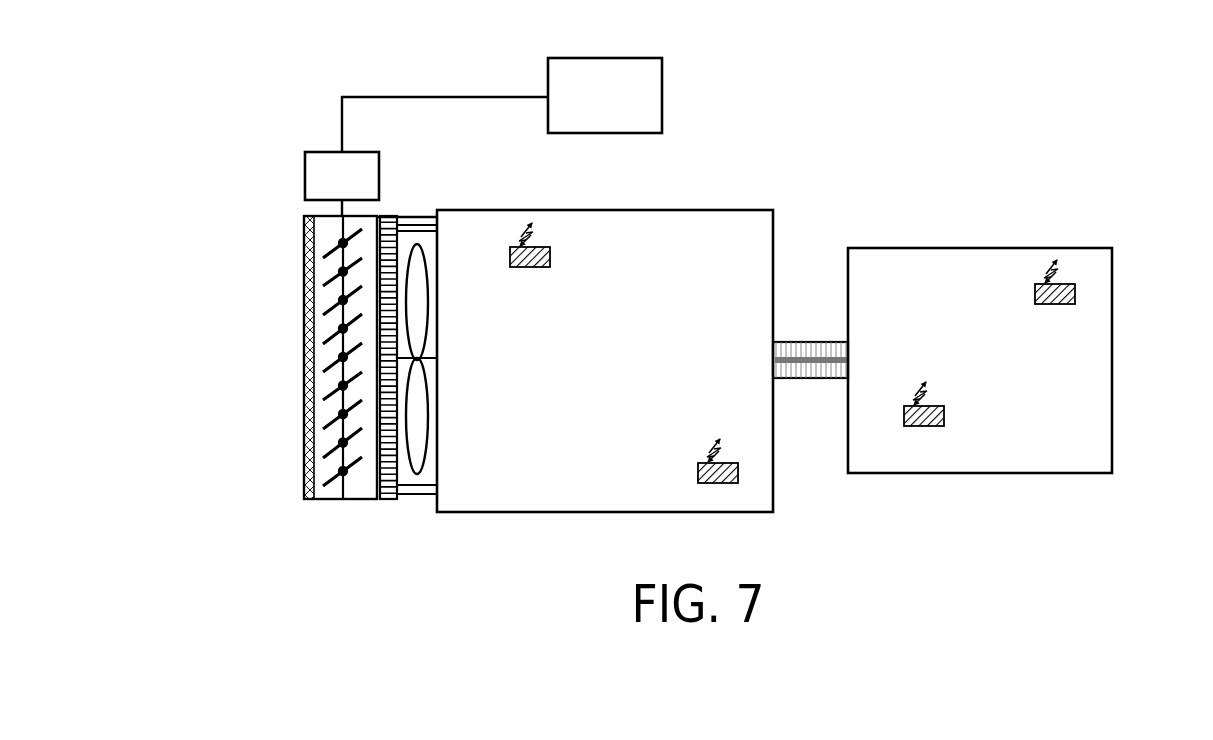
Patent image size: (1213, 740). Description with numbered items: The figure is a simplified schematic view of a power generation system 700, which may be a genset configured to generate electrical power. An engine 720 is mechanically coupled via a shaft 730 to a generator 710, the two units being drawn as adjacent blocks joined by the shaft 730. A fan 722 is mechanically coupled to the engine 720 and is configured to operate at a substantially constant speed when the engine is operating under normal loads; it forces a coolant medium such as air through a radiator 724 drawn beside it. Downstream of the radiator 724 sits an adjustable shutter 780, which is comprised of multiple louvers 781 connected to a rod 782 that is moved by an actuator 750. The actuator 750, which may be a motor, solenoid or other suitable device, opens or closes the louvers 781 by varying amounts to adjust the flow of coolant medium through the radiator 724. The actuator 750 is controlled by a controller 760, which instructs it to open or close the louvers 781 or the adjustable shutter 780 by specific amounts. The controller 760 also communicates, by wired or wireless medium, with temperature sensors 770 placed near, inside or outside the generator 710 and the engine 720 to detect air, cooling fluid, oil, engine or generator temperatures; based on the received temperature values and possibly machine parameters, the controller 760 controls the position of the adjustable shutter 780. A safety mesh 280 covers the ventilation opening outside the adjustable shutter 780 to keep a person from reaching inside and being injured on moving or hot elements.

The power generation system 700 is at (1030, 72).
The generator 710 is at (964, 374).
The engine 720 is at (580, 373).
The shaft 730 is at (811, 342).
The fan 722 is at (411, 245).
The radiator 724 is at (393, 495).
The actuator 750 is at (367, 191).
The controller 760 is at (580, 112).
The temperature sensors 770 is at (550, 241).
The adjustable shutter 780 is at (205, 340).
The louvers 781 is at (335, 444).
The rod 782 is at (340, 243).
The safety mesh 280 is at (302, 487).